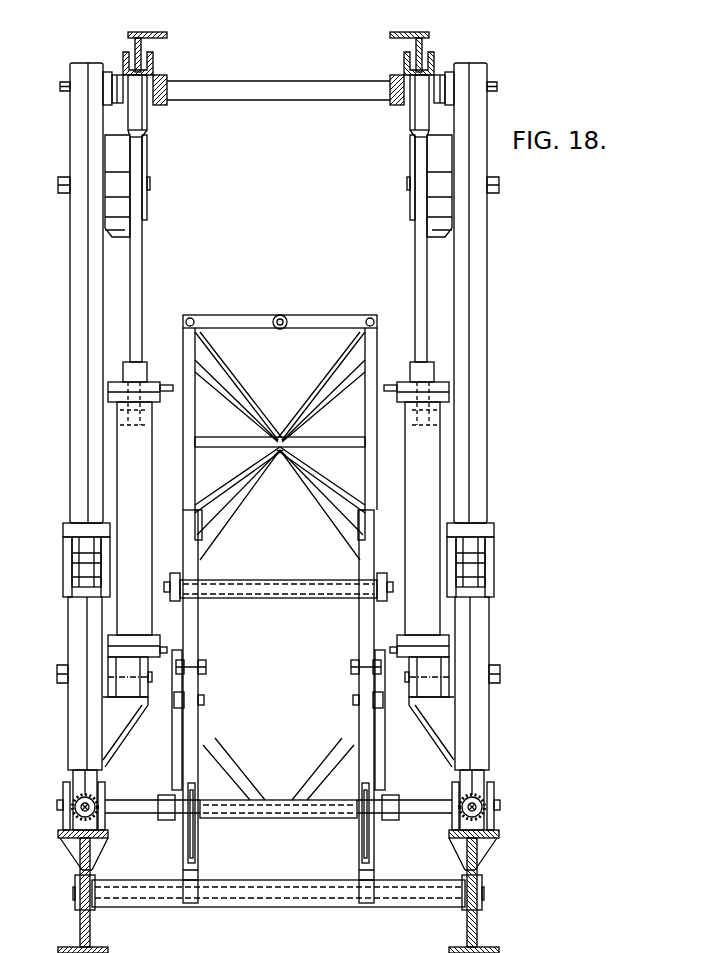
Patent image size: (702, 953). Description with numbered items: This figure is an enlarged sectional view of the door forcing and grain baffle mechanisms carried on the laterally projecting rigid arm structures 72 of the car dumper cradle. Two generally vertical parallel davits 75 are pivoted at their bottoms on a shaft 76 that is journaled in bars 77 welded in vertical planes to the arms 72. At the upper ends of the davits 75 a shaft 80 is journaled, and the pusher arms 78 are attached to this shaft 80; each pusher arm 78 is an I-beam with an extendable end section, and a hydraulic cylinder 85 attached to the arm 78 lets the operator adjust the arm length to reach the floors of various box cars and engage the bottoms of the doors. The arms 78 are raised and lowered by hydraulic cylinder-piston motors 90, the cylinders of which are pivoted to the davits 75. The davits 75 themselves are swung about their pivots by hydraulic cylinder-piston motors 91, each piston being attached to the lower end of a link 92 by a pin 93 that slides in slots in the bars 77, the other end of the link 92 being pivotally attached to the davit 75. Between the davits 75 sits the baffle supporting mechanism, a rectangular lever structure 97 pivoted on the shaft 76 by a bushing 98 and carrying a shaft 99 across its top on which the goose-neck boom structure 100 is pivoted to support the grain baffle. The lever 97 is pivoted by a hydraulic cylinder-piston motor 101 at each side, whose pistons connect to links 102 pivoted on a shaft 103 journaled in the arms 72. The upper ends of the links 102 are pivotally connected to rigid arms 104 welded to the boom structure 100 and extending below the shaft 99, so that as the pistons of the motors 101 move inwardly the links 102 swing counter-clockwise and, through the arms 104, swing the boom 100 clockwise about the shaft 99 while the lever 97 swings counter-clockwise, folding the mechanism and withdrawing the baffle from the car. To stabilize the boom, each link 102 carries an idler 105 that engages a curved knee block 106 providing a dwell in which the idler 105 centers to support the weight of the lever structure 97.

The arm structures 72 is at (82, 928).
The davits 75 is at (73, 430).
The shaft 76 is at (410, 803).
The bars 77 is at (65, 794).
The pusher arms 78 is at (157, 32).
The shaft 80 is at (280, 98).
The hydraulic cylinder 85 is at (171, 945).
The hydraulic cylinder-piston motors 90 is at (142, 487).
The hydraulic cylinder-piston motors 91 is at (98, 811).
The link 92 is at (70, 733).
The pin 93 is at (58, 808).
The lever structure 97 is at (168, 745).
The bushing 98 is at (302, 811).
The shaft 99 is at (275, 588).
The goose-neck boom structure 100 is at (320, 339).
The hydraulic cylinder-piston motor 101 is at (197, 845).
The links 102 is at (203, 732).
The shaft 103 is at (303, 895).
The rigid arms 104 is at (198, 623).
The idler 105 is at (184, 698).
The knee block 106 is at (205, 668).